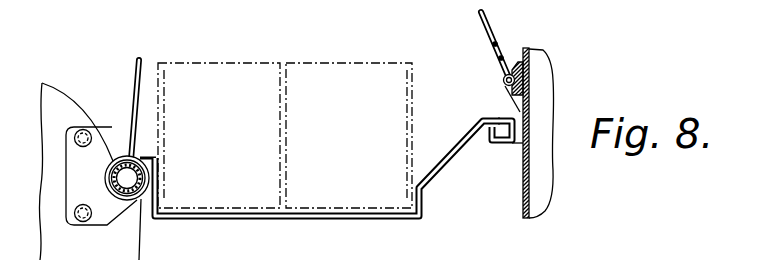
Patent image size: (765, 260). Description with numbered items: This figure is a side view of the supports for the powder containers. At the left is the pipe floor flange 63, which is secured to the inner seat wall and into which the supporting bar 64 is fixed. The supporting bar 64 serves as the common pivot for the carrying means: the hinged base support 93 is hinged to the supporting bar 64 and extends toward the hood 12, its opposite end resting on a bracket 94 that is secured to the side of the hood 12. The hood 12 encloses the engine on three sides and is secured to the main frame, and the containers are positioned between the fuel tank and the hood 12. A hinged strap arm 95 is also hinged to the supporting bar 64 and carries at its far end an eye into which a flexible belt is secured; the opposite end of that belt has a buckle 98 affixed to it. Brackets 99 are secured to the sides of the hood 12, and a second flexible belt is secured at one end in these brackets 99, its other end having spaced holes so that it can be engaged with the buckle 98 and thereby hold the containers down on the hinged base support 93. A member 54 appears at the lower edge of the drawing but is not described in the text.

The hood 12 is at (548, 177).
The frame member 54 is at (709, 254).
The pipe floor flange 63 is at (90, 171).
The supporting bar 64 is at (136, 182).
The hinged base support 93 is at (248, 222).
The bracket 94 is at (504, 146).
The hinged strap arm 95 is at (132, 88).
The buckle 98 is at (503, 86).
The bracket 99 is at (530, 90).